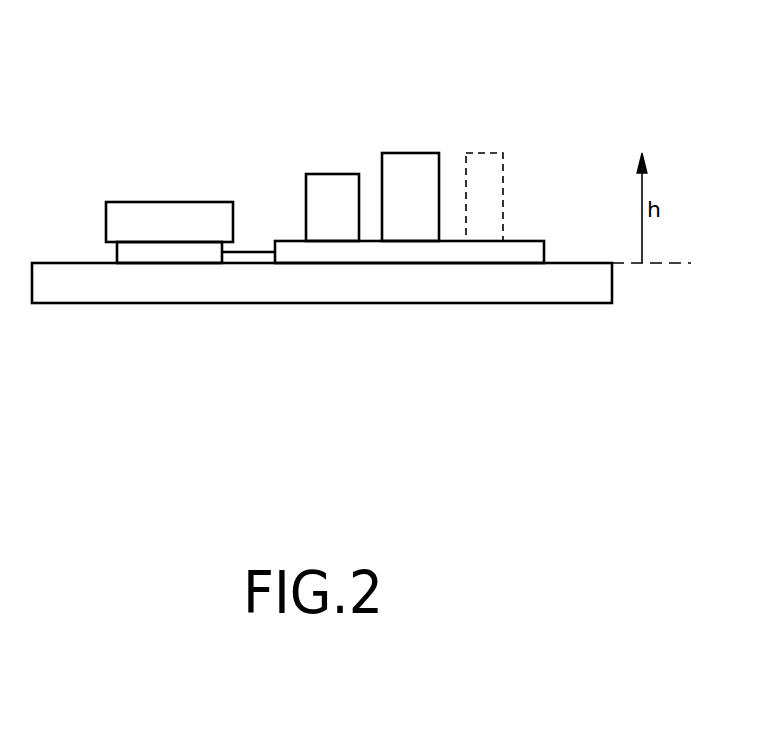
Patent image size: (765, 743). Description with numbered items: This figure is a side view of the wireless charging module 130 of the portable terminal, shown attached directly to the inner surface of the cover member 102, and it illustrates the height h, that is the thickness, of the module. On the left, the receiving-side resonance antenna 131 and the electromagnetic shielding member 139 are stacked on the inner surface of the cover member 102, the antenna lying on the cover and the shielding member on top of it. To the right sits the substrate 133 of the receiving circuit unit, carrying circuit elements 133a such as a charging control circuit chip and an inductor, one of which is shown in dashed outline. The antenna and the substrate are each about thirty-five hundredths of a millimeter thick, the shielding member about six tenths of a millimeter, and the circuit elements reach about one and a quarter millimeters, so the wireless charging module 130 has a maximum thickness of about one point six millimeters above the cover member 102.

The cover member 102 is at (555, 292).
The wireless charging module 130 is at (560, 120).
The receiving-side resonance antenna 131 is at (169, 253).
The substrate 133 is at (412, 253).
The circuit elements 133a is at (332, 180).
The electromagnetic shielding member 139 is at (162, 208).